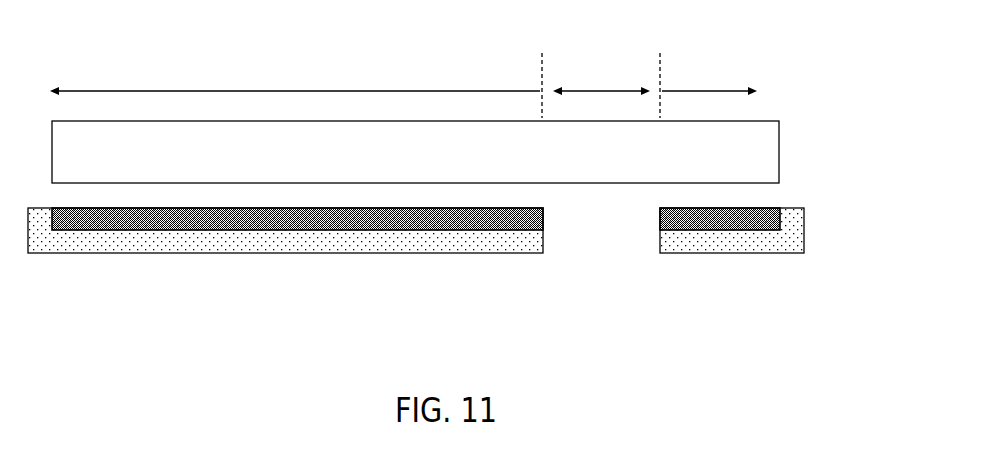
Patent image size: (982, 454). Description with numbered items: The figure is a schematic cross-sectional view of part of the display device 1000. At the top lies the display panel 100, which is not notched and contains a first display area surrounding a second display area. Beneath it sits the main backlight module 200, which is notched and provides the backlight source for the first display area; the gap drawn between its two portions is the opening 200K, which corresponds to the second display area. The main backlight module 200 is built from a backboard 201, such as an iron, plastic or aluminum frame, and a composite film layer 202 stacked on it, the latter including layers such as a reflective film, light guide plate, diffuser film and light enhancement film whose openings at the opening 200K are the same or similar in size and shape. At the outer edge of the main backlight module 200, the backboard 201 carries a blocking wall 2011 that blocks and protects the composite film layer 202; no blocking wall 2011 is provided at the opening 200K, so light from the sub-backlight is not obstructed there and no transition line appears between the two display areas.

The display device 1000 is at (696, 47).
The display panel 100 is at (767, 153).
The opening 200K is at (625, 222).
The main backlight module 200 is at (285, 280).
The backboard 201 is at (525, 237).
The composite film layer 202 is at (475, 220).
The blocking wall 2011 is at (793, 219).